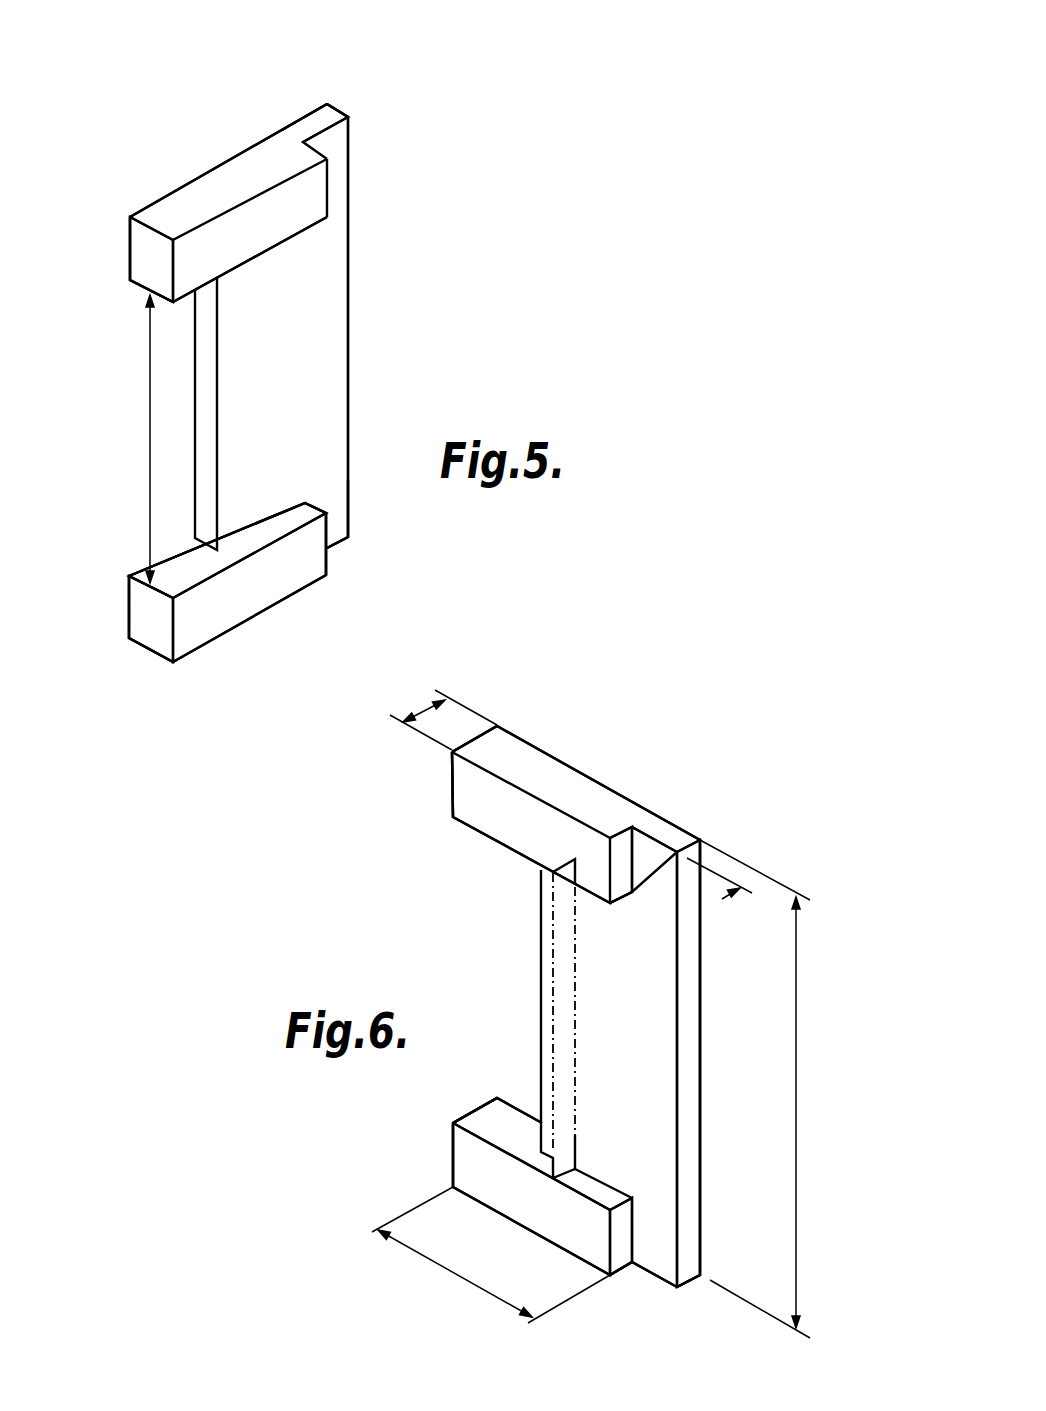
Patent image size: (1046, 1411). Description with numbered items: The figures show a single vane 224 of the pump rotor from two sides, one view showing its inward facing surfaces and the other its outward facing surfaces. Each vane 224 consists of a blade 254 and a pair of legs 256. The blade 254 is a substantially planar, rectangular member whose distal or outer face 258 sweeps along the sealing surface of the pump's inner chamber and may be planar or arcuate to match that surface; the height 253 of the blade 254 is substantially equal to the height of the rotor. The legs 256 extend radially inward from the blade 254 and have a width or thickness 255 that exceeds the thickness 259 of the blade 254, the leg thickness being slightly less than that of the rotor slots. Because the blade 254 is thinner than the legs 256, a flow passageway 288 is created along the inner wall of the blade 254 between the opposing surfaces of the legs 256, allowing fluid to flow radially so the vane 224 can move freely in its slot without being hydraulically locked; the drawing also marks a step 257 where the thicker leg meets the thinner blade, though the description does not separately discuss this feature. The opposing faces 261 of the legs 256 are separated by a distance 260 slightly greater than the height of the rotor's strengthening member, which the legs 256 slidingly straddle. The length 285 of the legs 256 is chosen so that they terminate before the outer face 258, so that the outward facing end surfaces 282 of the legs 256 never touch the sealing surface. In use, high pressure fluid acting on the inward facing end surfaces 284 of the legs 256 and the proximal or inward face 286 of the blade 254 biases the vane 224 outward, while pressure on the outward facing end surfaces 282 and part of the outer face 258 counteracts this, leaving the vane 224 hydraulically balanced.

In FIG. 5, the vane 224 is at (420, 163).
In FIG. 6, the vane 224 is at (725, 761).
In FIG. 6, the height of the blade 253 is at (800, 1095).
In FIG. 5, the blade 254 is at (320, 362).
In FIG. 6, the blade 254 is at (657, 1027).
In FIG. 6, the width or thickness of the legs 255 is at (423, 712).
In FIG. 5, the legs 256 is at (168, 212).
In FIG. 6, the legs 256 is at (497, 747).
In FIG. 6, the notch 257 is at (653, 857).
In FIG. 5, the distal or outer face 258 is at (338, 111).
In FIG. 6, the distal or outer face 258 is at (687, 933).
In FIG. 6, the thickness of the blade 259 is at (772, 875).
In FIG. 5, the distance 260 is at (150, 435).
In FIG. 5, the opposing faces of the legs 261 is at (220, 560).
In FIG. 6, the opposing faces of the legs 261 is at (515, 1112).
In FIG. 5, the outward facing end surface 282 is at (327, 560).
In FIG. 6, the outward facing end surface 282 is at (622, 1242).
In FIG. 5, the inward facing end surfaces 284 is at (143, 252).
In FIG. 6, the inward facing end surfaces 284 is at (455, 1150).
In FIG. 6, the length of the legs 285 is at (455, 1277).
In FIG. 5, the proximal or inward positioned face 286 is at (208, 518).
In FIG. 6, the proximal or inward positioned face 286 is at (541, 1003).
In FIG. 6, the flow passageway 288 is at (568, 1093).